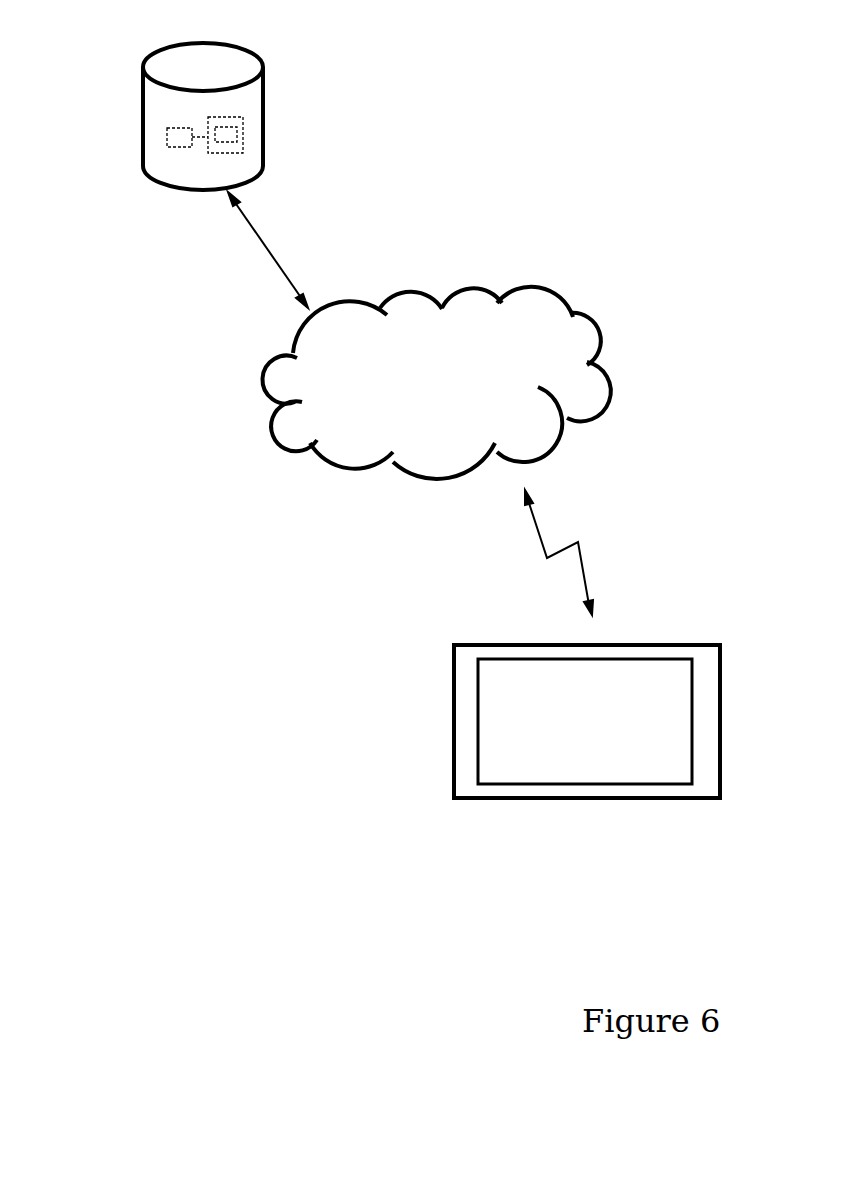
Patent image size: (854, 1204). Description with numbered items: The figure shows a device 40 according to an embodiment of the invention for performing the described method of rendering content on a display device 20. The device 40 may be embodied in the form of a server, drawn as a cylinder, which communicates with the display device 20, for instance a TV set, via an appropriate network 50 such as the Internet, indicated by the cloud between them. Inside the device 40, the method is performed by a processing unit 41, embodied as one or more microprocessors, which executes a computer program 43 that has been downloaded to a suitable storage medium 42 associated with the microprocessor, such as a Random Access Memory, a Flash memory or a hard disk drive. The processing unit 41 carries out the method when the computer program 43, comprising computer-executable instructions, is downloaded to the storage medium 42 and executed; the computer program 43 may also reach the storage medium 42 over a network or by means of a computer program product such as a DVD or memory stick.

The device 40 is at (165, 67).
The processing unit 41 is at (170, 136).
The storage medium 42 is at (240, 120).
The computer program 43 is at (227, 137).
The network 50 is at (277, 372).
The display device 20 is at (583, 648).